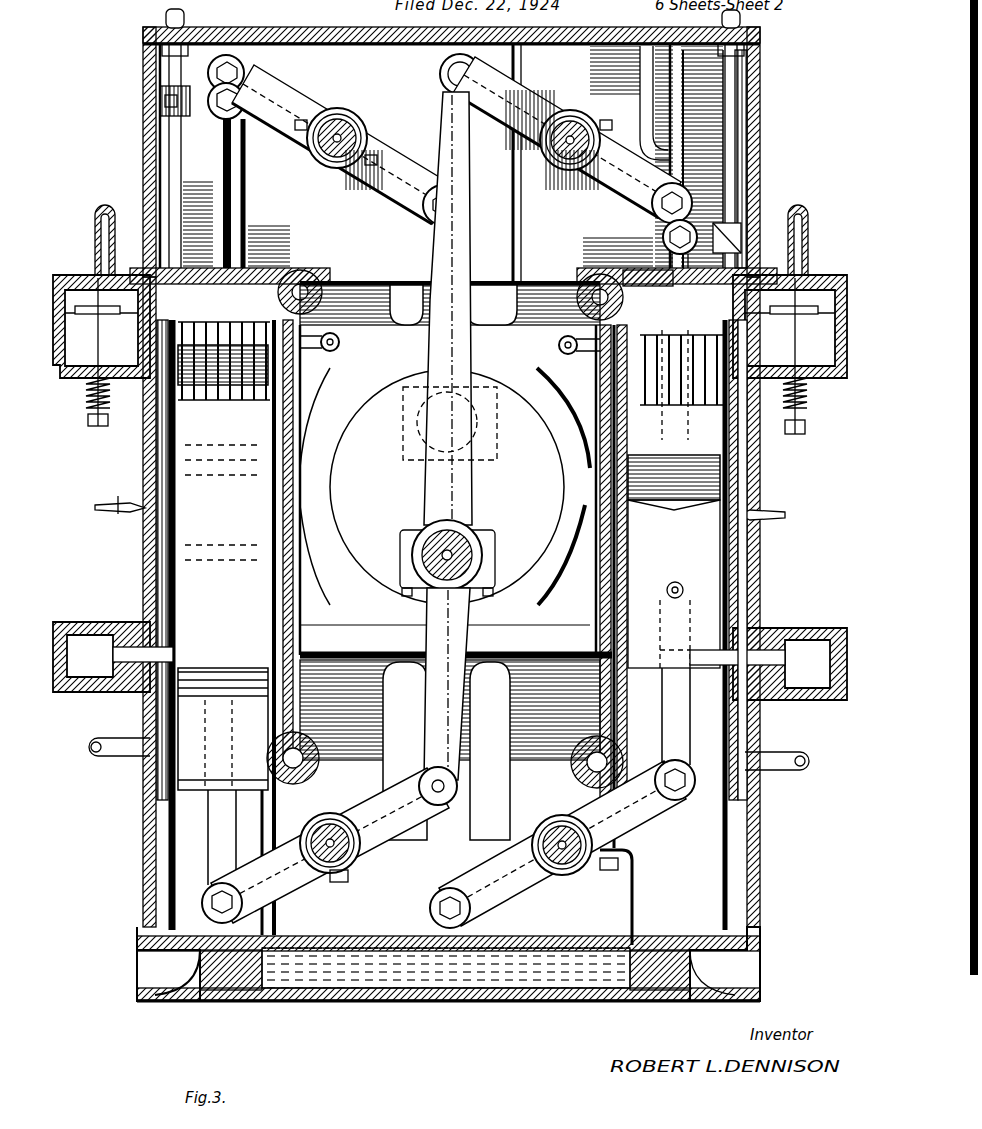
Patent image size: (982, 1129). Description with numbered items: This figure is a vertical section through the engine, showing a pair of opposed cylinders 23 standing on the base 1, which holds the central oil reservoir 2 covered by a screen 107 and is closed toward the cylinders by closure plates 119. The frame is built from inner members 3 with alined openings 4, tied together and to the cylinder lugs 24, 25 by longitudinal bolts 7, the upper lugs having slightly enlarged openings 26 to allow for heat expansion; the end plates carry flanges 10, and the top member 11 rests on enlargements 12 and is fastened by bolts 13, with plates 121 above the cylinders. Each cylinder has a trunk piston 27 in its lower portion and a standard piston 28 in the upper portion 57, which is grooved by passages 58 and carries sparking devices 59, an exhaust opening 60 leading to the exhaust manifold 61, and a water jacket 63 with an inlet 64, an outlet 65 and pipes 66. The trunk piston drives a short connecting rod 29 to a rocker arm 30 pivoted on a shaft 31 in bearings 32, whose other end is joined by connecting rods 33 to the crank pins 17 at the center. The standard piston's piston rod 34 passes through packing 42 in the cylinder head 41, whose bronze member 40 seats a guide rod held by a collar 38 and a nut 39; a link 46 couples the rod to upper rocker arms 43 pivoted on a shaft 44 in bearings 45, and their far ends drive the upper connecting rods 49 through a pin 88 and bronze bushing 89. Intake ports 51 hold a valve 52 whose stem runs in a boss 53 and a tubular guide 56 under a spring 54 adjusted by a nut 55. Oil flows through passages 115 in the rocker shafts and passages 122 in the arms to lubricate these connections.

The base 1 is at (745, 980).
The central reservoir 2 is at (538, 1004).
The inner members 3 is at (371, 750).
The openings 4 is at (118, 62).
The bolts 7 is at (218, 750).
The flanges 10 is at (452, 16).
The top member 11 is at (626, 32).
The enlargements 12 is at (291, 33).
The bolts 13 is at (320, 642).
The crank pins 17 is at (478, 553).
The cylinders 23 is at (752, 525).
The lugs 24 is at (285, 785).
The lugs 25 is at (575, 265).
The openings of greater diameter 26 is at (560, 318).
The trunk piston 27 is at (674, 596).
The standard piston 28 is at (742, 468).
The short connecting rod 29 is at (213, 832).
The rocker arm 30 is at (418, 798).
The shaft 31 is at (340, 870).
The bearings 32 is at (476, 873).
The connecting rods 33 is at (462, 765).
The piston rod 34 is at (682, 358).
The collar 38 is at (226, 44).
The nut 39 is at (166, 17).
The bronze member 40 is at (148, 270).
The cylinder head 41 is at (630, 260).
The packing 42 is at (255, 265).
The upper rocker arms 43 is at (456, 140).
The shaft 44 is at (360, 118).
The bearings 45 is at (338, 108).
The link 46 is at (660, 233).
The upper connecting rods 49 is at (445, 130).
The intake ports 51 is at (450, 326).
The valve 52 is at (95, 318).
The boss 53 is at (826, 378).
The spring 54 is at (86, 400).
The nut 55 is at (98, 428).
The tubular guide 56 is at (112, 222).
The upper portion 57 is at (420, 354).
The passages or grooves 58 is at (712, 408).
The sparking devices 59 is at (768, 510).
The exhaust opening 60 is at (122, 647).
The exhaust manifold 61 is at (92, 632).
The jacket 63 is at (752, 578).
The inlet 64 is at (775, 770).
The outlet 65 is at (570, 353).
The pipes 66 is at (332, 350).
The pin 88 is at (446, 76).
The bronze bushing 89 is at (478, 70).
The screen 107 is at (405, 990).
The passages 115 is at (330, 150).
The closure plates 119 is at (760, 890).
The plates 121 is at (143, 150).
The passages 122 is at (565, 85).